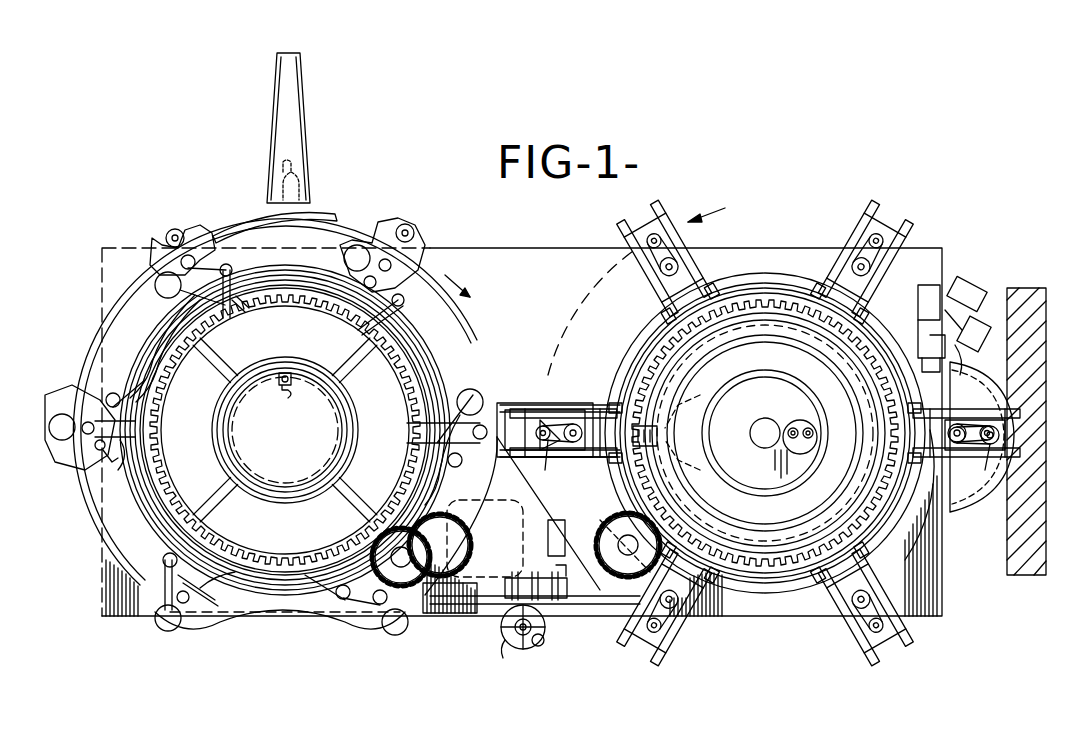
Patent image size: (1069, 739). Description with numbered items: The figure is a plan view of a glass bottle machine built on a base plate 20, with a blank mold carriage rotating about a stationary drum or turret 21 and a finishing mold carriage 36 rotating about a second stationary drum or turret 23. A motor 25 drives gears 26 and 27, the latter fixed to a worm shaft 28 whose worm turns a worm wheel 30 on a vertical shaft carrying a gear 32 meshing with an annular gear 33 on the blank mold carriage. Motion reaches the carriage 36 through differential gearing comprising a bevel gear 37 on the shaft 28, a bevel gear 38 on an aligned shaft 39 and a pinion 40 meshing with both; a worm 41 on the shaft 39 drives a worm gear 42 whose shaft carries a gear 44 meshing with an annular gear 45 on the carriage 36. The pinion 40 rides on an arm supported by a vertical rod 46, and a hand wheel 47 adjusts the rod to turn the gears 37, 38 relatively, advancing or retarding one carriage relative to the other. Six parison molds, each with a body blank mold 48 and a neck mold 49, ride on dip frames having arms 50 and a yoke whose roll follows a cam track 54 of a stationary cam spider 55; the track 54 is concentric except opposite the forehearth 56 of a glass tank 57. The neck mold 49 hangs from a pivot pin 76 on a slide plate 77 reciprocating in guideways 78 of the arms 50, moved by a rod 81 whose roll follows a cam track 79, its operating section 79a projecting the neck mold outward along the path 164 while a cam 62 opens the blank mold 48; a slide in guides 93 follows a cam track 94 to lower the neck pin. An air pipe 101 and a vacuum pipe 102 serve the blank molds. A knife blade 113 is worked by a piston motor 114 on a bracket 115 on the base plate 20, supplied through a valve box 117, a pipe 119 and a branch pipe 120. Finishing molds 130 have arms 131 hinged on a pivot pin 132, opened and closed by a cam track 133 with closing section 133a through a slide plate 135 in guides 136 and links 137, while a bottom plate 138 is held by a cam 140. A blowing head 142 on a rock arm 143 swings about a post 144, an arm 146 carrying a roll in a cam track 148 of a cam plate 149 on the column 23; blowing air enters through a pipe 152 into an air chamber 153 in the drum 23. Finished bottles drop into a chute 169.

The base plate 20 is at (108, 584).
The stationary drum or turret 21 is at (755, 462).
The stationary drum or turret 23 is at (222, 430).
The motor 25 is at (526, 505).
The gear 26 is at (562, 528).
The gear 27 is at (560, 572).
The worm shaft 28 is at (588, 606).
The worm wheel 30 is at (615, 535).
The gear 32 is at (618, 550).
The annular gear 33 is at (780, 598).
The finishing mold carriage 36 is at (90, 365).
The bevel gear 37 is at (550, 580).
The bevel gear 38 is at (515, 580).
The shaft 39 is at (446, 616).
The pinion 40 is at (503, 627).
The worm 41 is at (418, 630).
The worm gear 42 is at (445, 552).
The gear 44 is at (462, 525).
The annular gear 45 is at (145, 522).
The vertical rod 46 is at (542, 644).
The hand wheel 47 is at (508, 655).
The body blank mold 48 is at (575, 458).
The neck mold 49 is at (548, 455).
The arms 50 is at (590, 398).
The cam track 54 is at (903, 495).
The cam spider 55 is at (812, 500).
The forehearth 56 is at (990, 505).
The tank 57 is at (1007, 552).
The cam 62 is at (760, 415).
The pivot pin 76 is at (545, 450).
The slide plate 77 is at (545, 435).
The guideways 78 is at (655, 218).
The cam track 79 is at (818, 422).
The operating section 79a is at (658, 438).
The rod 81 is at (610, 398).
The guides 93 is at (652, 448).
The cam track 94 is at (903, 508).
The air pipe 101 is at (790, 425).
The vacuum pipe 102 is at (808, 440).
The knife blade 113 is at (975, 340).
The piston motor 114 is at (985, 290).
The bracket 115 is at (920, 322).
The valve box 117 is at (926, 372).
The pipe 119 is at (920, 298).
The branch pipe 120 is at (965, 378).
The finishing molds 130 is at (212, 244).
The arms 131 is at (60, 445).
The pivot pin 132 is at (97, 448).
The cam track 133 is at (155, 345).
The operating section 133a is at (476, 392).
The slide plate 135 is at (115, 470).
The guides 136 is at (240, 327).
The links 137 is at (108, 458).
The finishing mold bottom plate 138 is at (167, 235).
The stationary cam 140 is at (255, 222).
The blowing head 142 is at (163, 298).
The rock arm 143 is at (190, 272).
The vertical post 144 is at (113, 393).
The arm 146 is at (230, 290).
The cam track 148 is at (240, 310).
The cam plate 149 is at (235, 360).
The pipe 152 is at (285, 393).
The air chamber 153 is at (237, 444).
The broken line 164 is at (540, 487).
The chute 169 is at (310, 167).